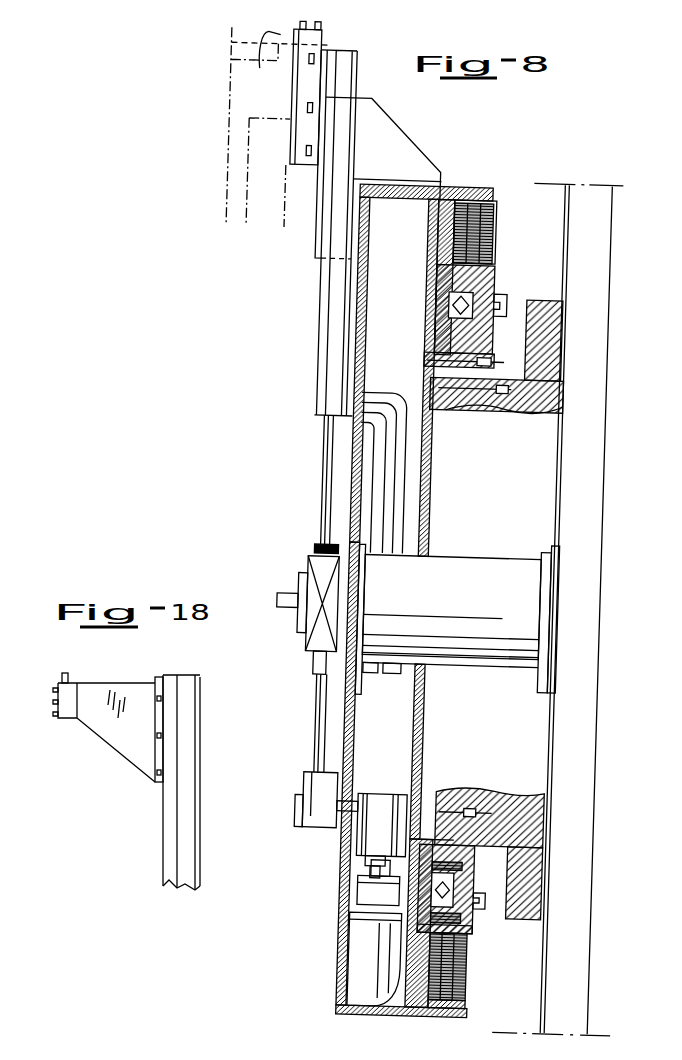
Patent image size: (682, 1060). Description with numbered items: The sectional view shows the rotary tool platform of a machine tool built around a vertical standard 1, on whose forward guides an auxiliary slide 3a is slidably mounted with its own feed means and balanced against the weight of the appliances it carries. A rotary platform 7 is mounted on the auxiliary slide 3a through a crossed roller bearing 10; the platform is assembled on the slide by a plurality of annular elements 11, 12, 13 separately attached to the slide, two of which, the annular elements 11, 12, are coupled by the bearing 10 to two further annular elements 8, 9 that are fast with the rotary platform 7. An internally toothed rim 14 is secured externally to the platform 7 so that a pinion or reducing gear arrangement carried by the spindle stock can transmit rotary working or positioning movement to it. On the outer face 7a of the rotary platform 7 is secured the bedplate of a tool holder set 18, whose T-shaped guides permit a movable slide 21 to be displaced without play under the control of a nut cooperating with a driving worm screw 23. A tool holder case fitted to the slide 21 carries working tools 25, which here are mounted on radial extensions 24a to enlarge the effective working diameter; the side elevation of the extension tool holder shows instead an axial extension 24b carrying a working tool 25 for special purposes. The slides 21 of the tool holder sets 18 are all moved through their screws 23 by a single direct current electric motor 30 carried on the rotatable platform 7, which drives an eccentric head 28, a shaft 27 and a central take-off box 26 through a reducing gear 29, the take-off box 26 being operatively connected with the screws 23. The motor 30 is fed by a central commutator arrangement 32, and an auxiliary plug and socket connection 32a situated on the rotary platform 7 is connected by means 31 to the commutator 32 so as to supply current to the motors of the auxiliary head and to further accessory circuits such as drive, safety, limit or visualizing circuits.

In FIG. 8, the vertical standard 1 is at (601, 214).
In FIG. 8, the auxiliary slide 3a is at (532, 318).
In FIG. 8, the rotary platform 7 is at (428, 710).
In FIG. 8, the outer face of the rotary platform 7a is at (358, 716).
In FIG. 8, the annular element 8 is at (423, 921).
In FIG. 8, the annular element 9 is at (481, 930).
In FIG. 8, the crossed roller bearing 10 is at (460, 889).
In FIG. 8, the annular element 11 is at (396, 877).
In FIG. 8, the annular element 12 is at (514, 825).
In FIG. 8, the annular element 13 is at (466, 812).
In FIG. 8, the internally toothed rim 14 is at (476, 979).
In FIG. 8, the tool holder set 18 is at (307, 366).
In FIG. 8, the movable slide 21 is at (338, 70).
In FIG. 8, the driving worm screw 23 is at (324, 454).
In FIG. 8, the radial extension 24a is at (311, 46).
In FIG. 18, the axial extension 24b is at (122, 757).
In FIG. 8, the working tool 25 is at (261, 61).
In FIG. 18, the working tool 25 is at (65, 673).
In FIG. 8, the central take-off box 26 is at (300, 581).
In FIG. 8, the shaft 27 is at (320, 725).
In FIG. 8, the eccentric head 28 is at (316, 826).
In FIG. 8, the reducing gear 29 is at (378, 803).
In FIG. 8, the electric motor 30 is at (357, 977).
In FIG. 8, the connecting means 31 is at (401, 507).
In FIG. 8, the central commutator arrangement 32 is at (480, 581).
In FIG. 8, the auxiliary plug and socket connection 32a is at (357, 397).